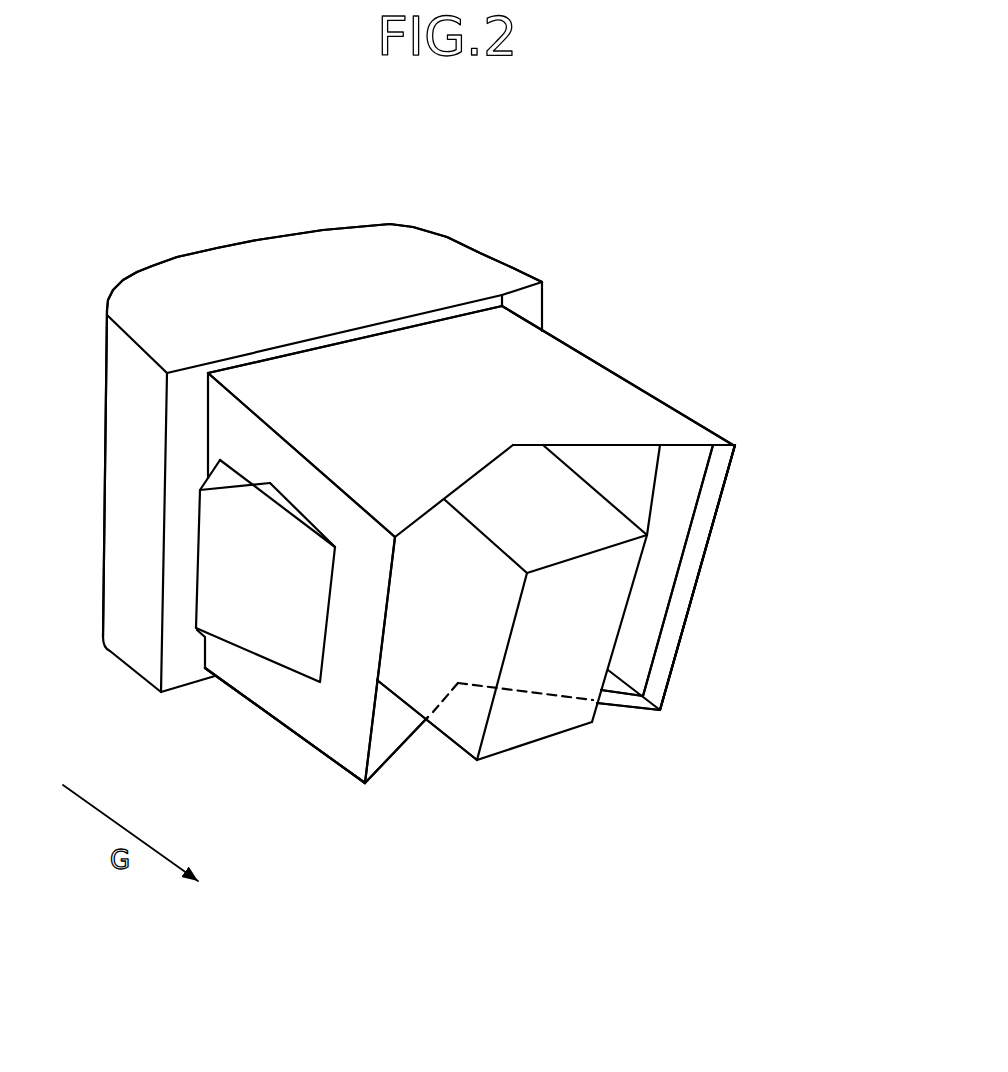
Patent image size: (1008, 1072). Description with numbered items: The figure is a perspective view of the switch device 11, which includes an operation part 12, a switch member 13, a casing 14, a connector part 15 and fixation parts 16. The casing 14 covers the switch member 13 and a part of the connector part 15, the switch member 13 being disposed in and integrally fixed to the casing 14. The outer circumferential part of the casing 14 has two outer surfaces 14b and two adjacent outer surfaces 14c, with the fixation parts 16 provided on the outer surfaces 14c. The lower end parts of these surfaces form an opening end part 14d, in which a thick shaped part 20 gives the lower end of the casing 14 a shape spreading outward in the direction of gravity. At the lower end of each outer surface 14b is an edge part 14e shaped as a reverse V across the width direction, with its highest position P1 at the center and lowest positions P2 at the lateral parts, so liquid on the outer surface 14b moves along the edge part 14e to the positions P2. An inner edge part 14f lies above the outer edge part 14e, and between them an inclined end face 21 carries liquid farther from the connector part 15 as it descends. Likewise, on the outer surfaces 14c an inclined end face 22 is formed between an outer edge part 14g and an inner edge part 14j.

The switch device 11 is at (346, 178).
The operation part 12 is at (403, 235).
The switch member 13 is at (502, 293).
The casing 14 is at (587, 288).
The outer surface 14b is at (572, 387).
The outer surface 14c is at (340, 730).
The opening end part 14d is at (769, 426).
The edge part 14e is at (613, 445).
The edge part 14f is at (413, 733).
The edge part 14g is at (717, 525).
The edge part 14j is at (675, 610).
The connector part 15 is at (540, 710).
The fixation part 16 is at (272, 623).
The thick shaped part 20 is at (662, 730).
The end face 21 is at (460, 738).
The end face 22 is at (662, 662).
The position P1 is at (513, 445).
The position P2 is at (733, 445).